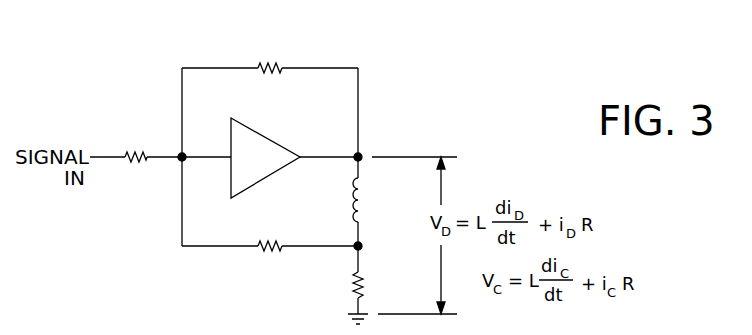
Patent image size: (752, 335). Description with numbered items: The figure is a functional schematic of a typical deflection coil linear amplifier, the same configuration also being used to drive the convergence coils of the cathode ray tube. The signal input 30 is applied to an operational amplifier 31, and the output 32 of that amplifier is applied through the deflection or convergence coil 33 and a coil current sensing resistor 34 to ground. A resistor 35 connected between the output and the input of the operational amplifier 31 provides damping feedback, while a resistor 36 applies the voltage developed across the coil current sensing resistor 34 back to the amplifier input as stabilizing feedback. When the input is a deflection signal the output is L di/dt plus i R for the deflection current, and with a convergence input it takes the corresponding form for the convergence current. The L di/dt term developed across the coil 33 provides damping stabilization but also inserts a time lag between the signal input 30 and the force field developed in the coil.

The signal input 30 is at (108, 157).
The operational amplifier 31 is at (262, 128).
The output 32 is at (323, 156).
The deflection or convergence coil 33 is at (368, 197).
The coil current sensing resistor 34 is at (368, 283).
The resistor 35 is at (265, 64).
The resistor 36 is at (268, 242).